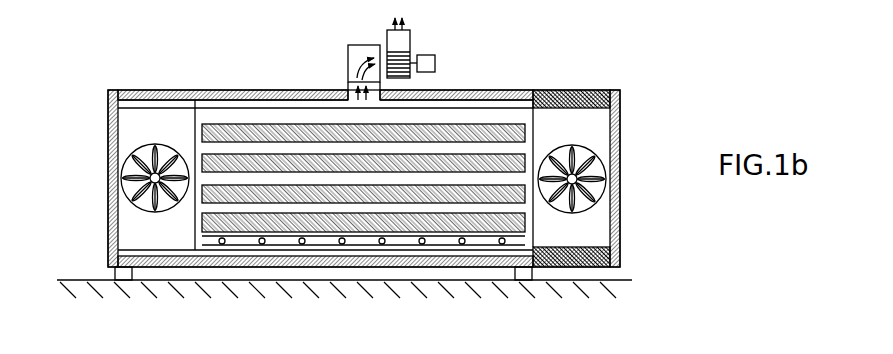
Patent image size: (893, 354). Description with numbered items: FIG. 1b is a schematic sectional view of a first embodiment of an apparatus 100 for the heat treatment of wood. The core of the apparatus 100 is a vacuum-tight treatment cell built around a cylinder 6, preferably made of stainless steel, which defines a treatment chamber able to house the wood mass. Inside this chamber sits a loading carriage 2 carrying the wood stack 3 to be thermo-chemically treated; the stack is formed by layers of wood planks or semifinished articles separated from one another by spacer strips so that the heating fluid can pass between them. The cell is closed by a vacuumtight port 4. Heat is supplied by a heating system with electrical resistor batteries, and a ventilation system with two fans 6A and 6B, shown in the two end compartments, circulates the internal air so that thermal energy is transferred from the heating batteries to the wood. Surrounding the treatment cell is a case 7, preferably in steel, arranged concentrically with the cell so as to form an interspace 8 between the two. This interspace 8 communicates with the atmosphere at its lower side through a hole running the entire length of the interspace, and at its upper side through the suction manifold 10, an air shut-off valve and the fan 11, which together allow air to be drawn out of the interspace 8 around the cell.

The apparatus 100 is at (124, 78).
The loading carriage 2 is at (237, 240).
The wood stack 3 is at (302, 128).
The vacuumtight port 4 is at (131, 132).
The cylinder 6 is at (505, 107).
The fan 6A is at (118, 186).
The fan 6B is at (600, 190).
The case 7 is at (483, 96).
The interspace 8 is at (233, 98).
The suction manifold 10 is at (348, 50).
The fan 11 is at (406, 36).